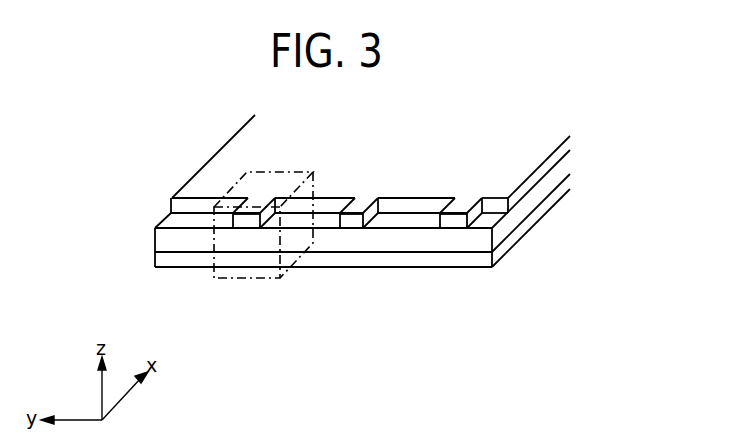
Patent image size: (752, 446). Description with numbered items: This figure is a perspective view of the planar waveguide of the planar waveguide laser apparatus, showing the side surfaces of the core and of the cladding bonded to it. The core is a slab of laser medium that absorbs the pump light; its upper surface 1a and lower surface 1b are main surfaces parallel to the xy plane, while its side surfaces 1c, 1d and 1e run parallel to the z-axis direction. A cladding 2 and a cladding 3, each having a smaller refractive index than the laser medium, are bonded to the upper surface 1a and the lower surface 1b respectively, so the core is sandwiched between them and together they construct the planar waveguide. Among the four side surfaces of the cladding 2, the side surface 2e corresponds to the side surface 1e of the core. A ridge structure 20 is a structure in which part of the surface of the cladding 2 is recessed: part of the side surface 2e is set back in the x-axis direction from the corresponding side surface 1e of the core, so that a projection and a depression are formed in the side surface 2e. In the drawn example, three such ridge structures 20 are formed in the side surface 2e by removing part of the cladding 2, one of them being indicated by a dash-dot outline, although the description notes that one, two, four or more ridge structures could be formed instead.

The upper surface 1a is at (188, 222).
The lower surface 1b is at (445, 253).
The side surface 1c is at (155, 247).
The side surface 1d is at (530, 200).
The side surface 1e is at (182, 244).
The cladding 2 is at (392, 178).
The side surface 2e is at (199, 200).
The cladding 3 is at (353, 258).
The ridge structure 20 is at (219, 280).